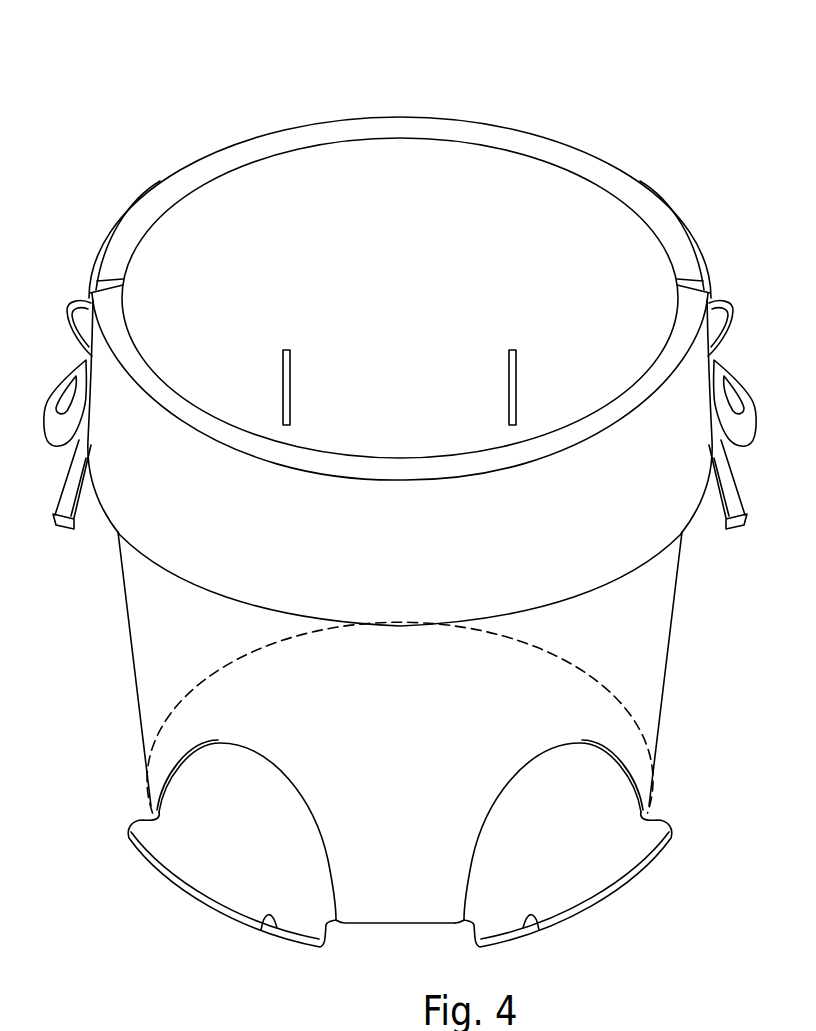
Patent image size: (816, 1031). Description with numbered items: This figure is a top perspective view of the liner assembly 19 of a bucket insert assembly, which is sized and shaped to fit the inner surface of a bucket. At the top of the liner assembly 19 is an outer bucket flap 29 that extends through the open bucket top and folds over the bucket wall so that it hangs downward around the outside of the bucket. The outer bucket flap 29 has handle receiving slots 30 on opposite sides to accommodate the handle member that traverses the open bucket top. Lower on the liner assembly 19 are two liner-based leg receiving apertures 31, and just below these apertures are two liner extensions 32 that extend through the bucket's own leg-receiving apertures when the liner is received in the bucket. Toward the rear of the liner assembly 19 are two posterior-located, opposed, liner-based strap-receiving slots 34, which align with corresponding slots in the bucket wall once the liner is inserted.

The liner assembly 19 is at (599, 90).
The outer bucket flap 29 is at (143, 502).
The handle receiving slots 30 is at (101, 285).
The liner-based leg receiving apertures 31 is at (222, 852).
The liner extensions 32 is at (263, 922).
The liner-based strap-receiving slots 34 is at (290, 388).